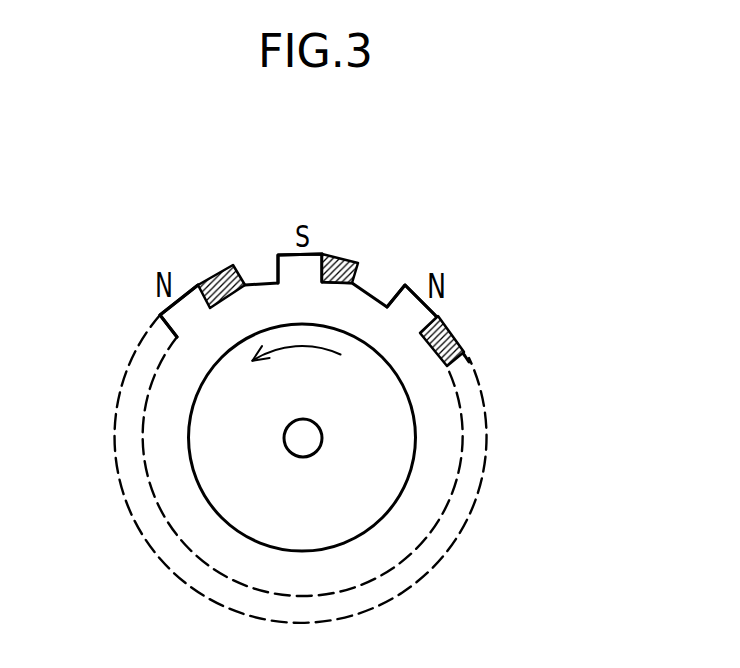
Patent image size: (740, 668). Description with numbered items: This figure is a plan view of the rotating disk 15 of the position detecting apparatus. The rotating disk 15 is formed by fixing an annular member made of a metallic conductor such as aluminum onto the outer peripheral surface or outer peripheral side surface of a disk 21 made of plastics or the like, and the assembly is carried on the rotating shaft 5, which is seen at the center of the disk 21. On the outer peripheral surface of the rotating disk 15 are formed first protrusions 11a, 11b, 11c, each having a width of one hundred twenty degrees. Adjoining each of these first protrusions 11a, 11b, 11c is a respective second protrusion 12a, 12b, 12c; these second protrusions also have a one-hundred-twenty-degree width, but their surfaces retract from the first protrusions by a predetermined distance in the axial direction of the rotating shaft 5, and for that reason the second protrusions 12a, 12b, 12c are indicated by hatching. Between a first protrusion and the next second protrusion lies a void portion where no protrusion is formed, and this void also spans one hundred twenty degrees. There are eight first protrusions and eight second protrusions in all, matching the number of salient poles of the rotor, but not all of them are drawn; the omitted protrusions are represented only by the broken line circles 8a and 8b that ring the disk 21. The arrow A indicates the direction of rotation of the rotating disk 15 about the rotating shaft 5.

The rotating shaft 5 is at (320, 450).
The broken line circle 8a is at (452, 493).
The broken line circle 8b is at (455, 542).
The first protrusion 11a is at (185, 290).
The first protrusion 11b is at (312, 253).
The first protrusion 11c is at (433, 305).
The second protrusion 12a is at (210, 272).
The second protrusion 12b is at (340, 257).
The second protrusion 12c is at (450, 330).
The rotating disk 15 is at (358, 312).
The disk 21 is at (197, 483).
The rotation direction A is at (300, 347).